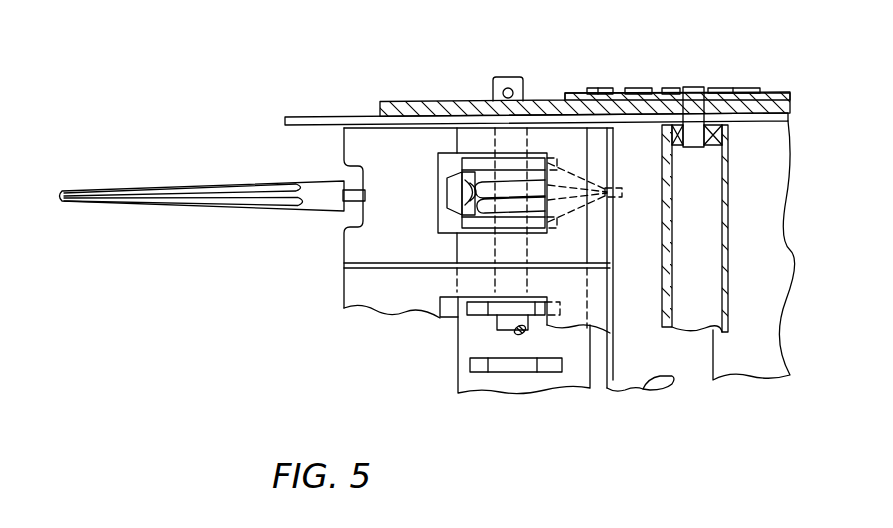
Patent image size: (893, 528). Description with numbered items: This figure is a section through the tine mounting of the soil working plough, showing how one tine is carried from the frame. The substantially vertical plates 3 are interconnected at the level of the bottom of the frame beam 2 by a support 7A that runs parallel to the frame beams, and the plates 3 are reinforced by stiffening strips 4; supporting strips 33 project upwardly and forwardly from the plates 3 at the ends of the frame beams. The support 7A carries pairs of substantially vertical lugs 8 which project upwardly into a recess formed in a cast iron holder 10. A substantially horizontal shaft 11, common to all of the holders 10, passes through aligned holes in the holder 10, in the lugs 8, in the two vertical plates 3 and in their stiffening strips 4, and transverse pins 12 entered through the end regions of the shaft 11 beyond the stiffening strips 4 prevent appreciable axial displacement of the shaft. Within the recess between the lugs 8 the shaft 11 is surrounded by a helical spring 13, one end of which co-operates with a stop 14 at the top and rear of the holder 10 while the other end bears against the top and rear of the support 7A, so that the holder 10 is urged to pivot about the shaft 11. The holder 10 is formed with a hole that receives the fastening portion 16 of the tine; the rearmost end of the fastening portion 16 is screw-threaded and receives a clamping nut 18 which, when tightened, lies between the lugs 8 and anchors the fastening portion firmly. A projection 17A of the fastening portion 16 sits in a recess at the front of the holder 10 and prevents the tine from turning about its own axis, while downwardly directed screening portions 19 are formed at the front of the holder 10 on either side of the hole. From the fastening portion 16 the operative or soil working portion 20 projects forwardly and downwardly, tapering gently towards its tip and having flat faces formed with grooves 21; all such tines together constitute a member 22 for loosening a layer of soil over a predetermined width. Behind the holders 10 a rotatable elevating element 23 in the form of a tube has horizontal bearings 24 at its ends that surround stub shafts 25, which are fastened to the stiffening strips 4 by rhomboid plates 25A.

The frame beam 2 is at (750, 360).
The substantially vertical plate 3 is at (324, 118).
The stiffening strip 4 is at (733, 102).
The support 7A is at (467, 380).
The lug 8 is at (473, 362).
The holder 10 is at (385, 148).
The shaft 11 is at (500, 78).
The transverse pin 12 is at (514, 92).
The helical spring 13 is at (508, 205).
The stop 14 is at (598, 250).
The fastening portion 16 is at (478, 162).
The projection 17A is at (366, 196).
The clamping nut 18 is at (448, 205).
The screening portion 19 is at (343, 146).
The operative or soil working portion 20 is at (168, 177).
The groove 21 is at (250, 203).
The member for loosening a layer of soil 22 is at (98, 188).
The rotatable elevating element 23 is at (705, 270).
The horizontal bearing 24 is at (707, 146).
The stub shaft 25 is at (688, 98).
The rhomboid plate 25A is at (642, 88).
The supporting strip 33 is at (443, 108).